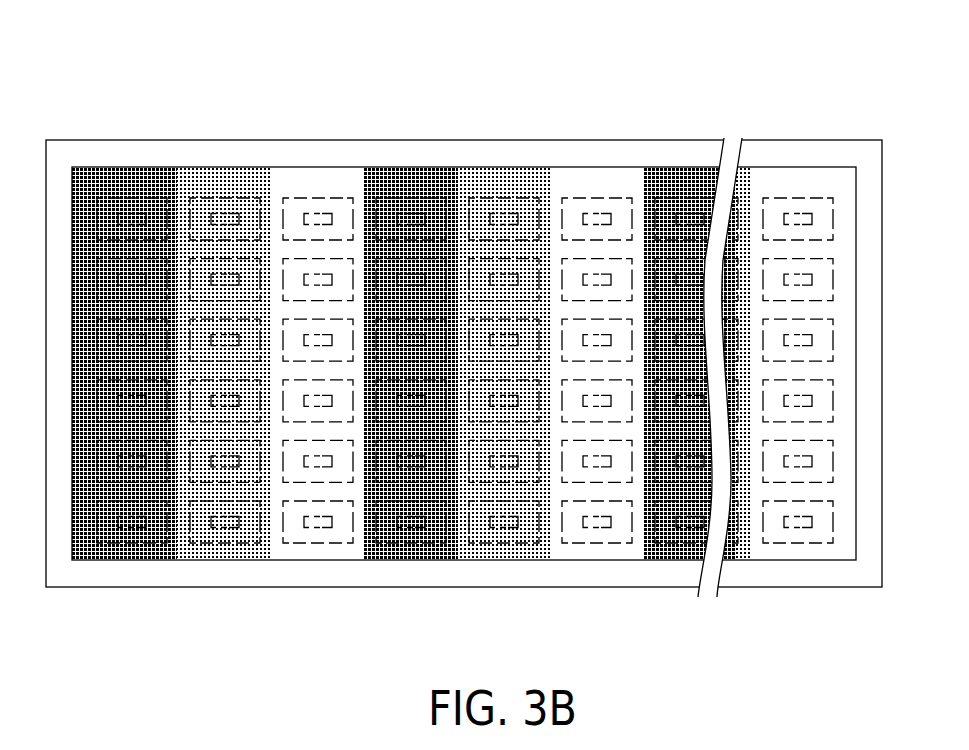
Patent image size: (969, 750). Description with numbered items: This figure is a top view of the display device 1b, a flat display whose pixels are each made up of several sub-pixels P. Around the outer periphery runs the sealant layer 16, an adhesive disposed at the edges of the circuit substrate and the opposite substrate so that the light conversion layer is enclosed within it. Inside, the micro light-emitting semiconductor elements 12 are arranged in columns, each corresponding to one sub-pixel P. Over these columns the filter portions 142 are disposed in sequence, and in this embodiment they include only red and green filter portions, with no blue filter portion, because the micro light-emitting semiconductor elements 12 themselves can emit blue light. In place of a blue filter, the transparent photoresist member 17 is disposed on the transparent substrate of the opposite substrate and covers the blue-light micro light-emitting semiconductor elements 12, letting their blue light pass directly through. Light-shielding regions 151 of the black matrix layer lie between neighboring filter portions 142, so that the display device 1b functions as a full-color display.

The display device 1b is at (126, 68).
The sealant layer 16 is at (57, 193).
The micro light-emitting semiconductor elements 12 is at (405, 168).
The filter portions 142 is at (257, 178).
The transparent photoresist member 17 is at (338, 180).
The sub-pixels P is at (309, 162).
The light-shielding regions 151 is at (748, 197).